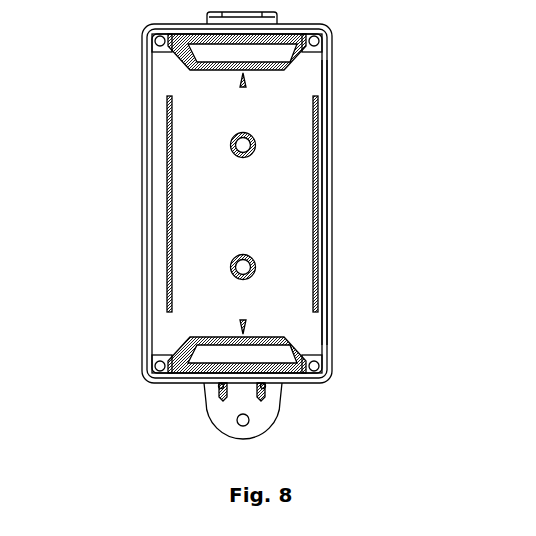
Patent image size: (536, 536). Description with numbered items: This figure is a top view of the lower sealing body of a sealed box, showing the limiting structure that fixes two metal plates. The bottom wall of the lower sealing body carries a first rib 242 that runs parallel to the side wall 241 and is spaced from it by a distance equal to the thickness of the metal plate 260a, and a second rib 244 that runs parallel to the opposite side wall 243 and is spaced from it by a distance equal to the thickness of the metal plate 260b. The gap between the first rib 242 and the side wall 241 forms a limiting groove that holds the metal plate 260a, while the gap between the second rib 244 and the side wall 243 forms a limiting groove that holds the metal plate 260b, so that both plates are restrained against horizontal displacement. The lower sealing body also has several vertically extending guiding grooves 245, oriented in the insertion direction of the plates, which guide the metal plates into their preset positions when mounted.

The side wall 241 is at (150, 94).
The first rib 242 is at (166, 194).
The side wall 243 is at (328, 90).
The second rib 244 is at (330, 172).
The guiding grooves 245 is at (150, 52).
The metal plate 260a is at (165, 148).
The metal plate 260b is at (331, 130).